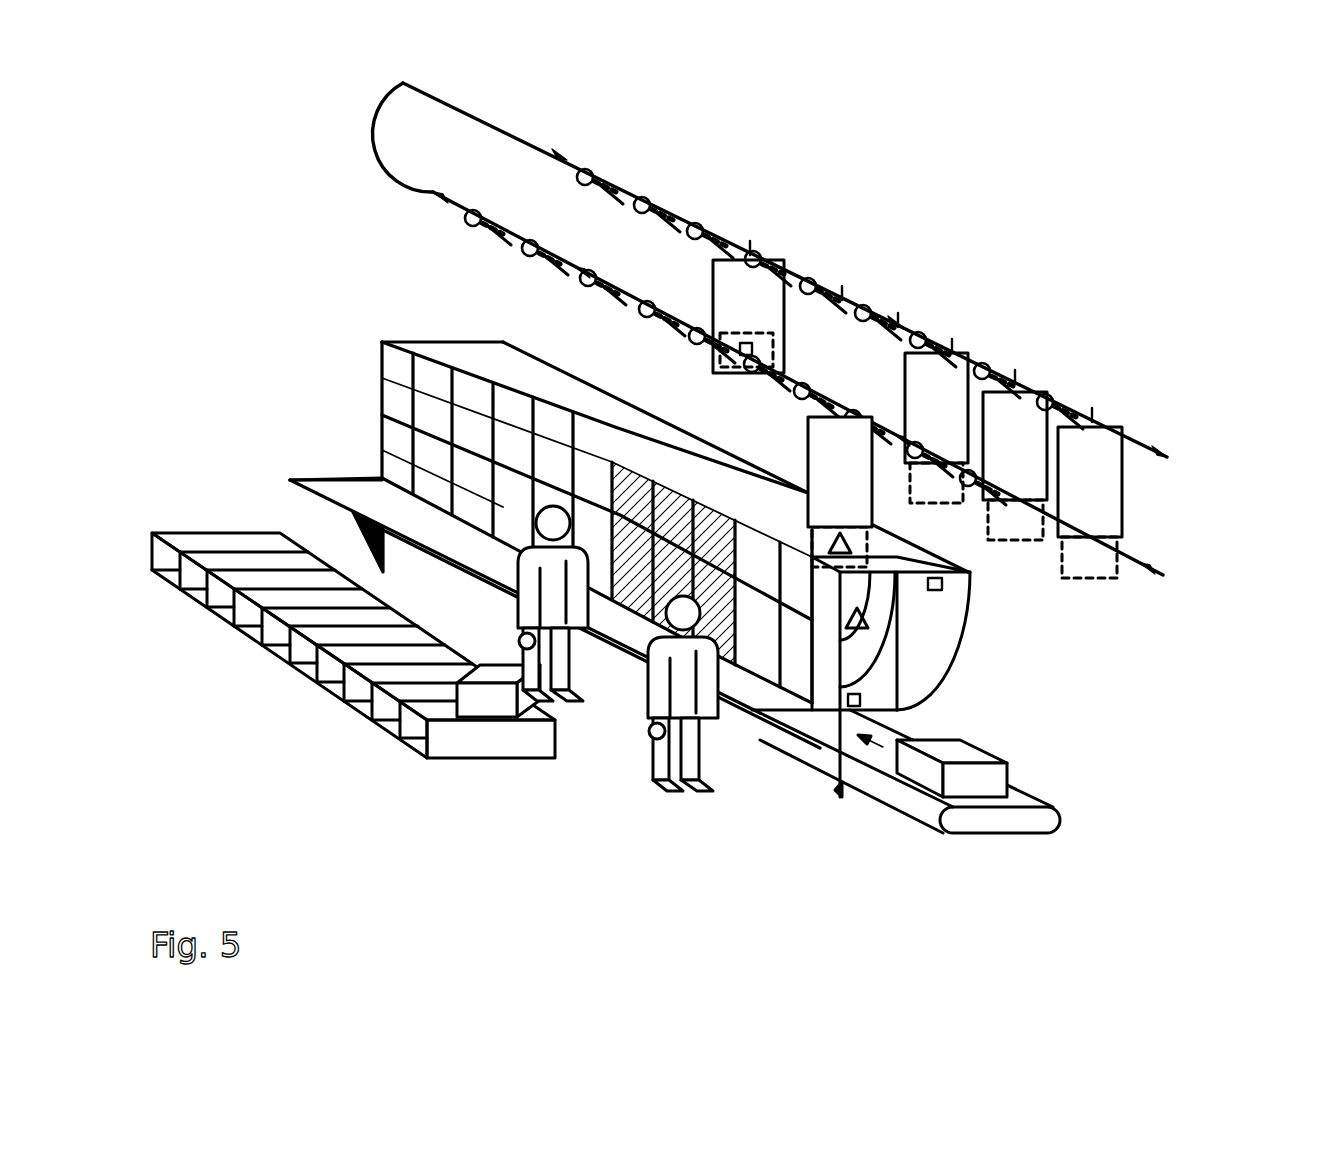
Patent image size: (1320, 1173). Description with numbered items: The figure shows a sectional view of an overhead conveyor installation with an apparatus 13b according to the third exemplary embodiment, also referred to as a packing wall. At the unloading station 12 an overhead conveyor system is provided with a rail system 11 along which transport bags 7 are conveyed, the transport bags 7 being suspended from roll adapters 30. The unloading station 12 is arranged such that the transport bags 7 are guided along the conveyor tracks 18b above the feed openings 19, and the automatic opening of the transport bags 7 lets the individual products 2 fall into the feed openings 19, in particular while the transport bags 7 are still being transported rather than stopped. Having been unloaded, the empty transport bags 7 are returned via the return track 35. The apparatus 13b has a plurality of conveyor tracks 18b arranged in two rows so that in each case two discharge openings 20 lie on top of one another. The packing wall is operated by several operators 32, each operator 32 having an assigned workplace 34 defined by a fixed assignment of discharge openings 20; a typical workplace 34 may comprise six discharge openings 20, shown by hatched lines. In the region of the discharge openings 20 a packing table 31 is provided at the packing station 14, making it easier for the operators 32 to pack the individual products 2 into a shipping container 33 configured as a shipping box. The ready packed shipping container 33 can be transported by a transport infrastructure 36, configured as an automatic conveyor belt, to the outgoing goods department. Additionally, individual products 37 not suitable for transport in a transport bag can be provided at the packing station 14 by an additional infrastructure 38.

The individual products 2 is at (752, 343).
The transport bags 7 is at (743, 268).
The rail system 11 is at (1135, 555).
The unloading station 12 is at (908, 290).
The apparatus 13b is at (380, 447).
The packing station 14 is at (733, 898).
The conveyor tracks 18b is at (912, 673).
The feed openings 19 is at (935, 563).
The discharge openings 20 is at (828, 680).
The roll adapters 30 is at (752, 252).
The packing table 31 is at (347, 482).
The operators 32 is at (660, 777).
The shipping container 33 is at (993, 777).
The workplace 34 is at (380, 375).
The return track 35 is at (1135, 440).
The transport infrastructure 36 is at (1037, 820).
The individual products not suitable for transport in a transport bag 37 is at (490, 710).
The additional infrastructure 38 is at (257, 643).